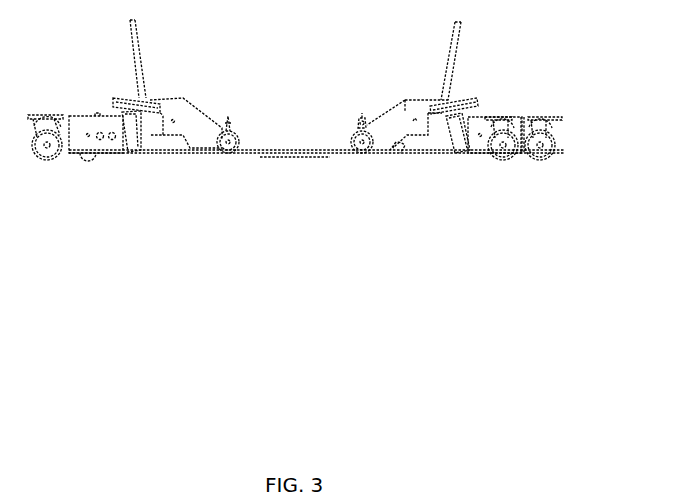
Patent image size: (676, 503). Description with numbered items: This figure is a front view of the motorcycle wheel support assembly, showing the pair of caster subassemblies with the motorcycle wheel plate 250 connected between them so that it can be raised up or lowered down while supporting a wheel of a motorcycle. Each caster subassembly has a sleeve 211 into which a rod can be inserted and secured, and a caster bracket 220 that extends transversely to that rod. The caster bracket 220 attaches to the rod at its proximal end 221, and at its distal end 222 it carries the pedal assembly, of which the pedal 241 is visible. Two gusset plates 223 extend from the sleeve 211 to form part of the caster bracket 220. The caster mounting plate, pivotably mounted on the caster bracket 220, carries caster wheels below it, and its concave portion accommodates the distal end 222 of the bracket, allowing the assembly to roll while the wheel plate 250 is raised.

The sleeve 211 is at (354, 130).
The caster bracket 220 is at (405, 100).
The proximal end 221 is at (378, 153).
The distal end 222 is at (443, 98).
The gusset plates 223 is at (405, 150).
The pedal 241 is at (463, 32).
The motorcycle wheel plate 250 is at (295, 150).